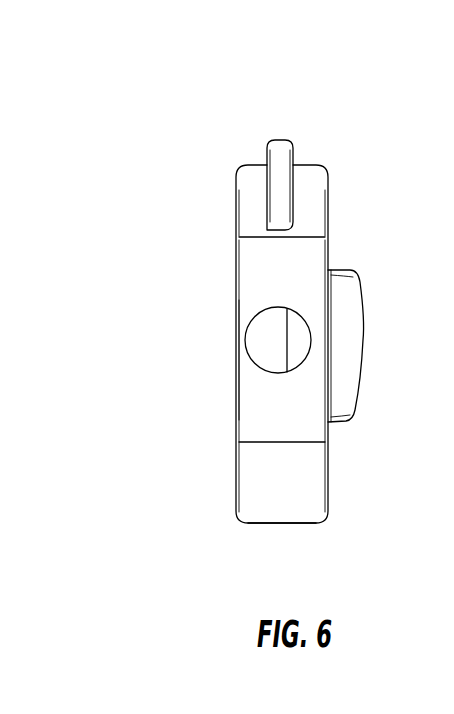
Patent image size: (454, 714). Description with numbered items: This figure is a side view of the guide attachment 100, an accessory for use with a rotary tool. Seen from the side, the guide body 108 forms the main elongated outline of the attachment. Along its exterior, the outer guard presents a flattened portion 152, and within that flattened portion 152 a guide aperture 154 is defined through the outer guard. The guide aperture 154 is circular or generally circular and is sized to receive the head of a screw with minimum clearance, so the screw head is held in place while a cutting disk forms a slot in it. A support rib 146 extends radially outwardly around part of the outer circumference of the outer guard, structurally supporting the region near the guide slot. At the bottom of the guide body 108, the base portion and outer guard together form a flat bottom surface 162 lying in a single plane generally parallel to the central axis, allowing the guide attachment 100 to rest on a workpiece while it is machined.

The guide attachment 100 is at (158, 95).
The guide body 108 is at (363, 162).
The support rib 146 is at (278, 152).
The flattened portion 152 is at (258, 407).
The guide aperture 154 is at (265, 338).
The flat bottom surface 162 is at (282, 530).